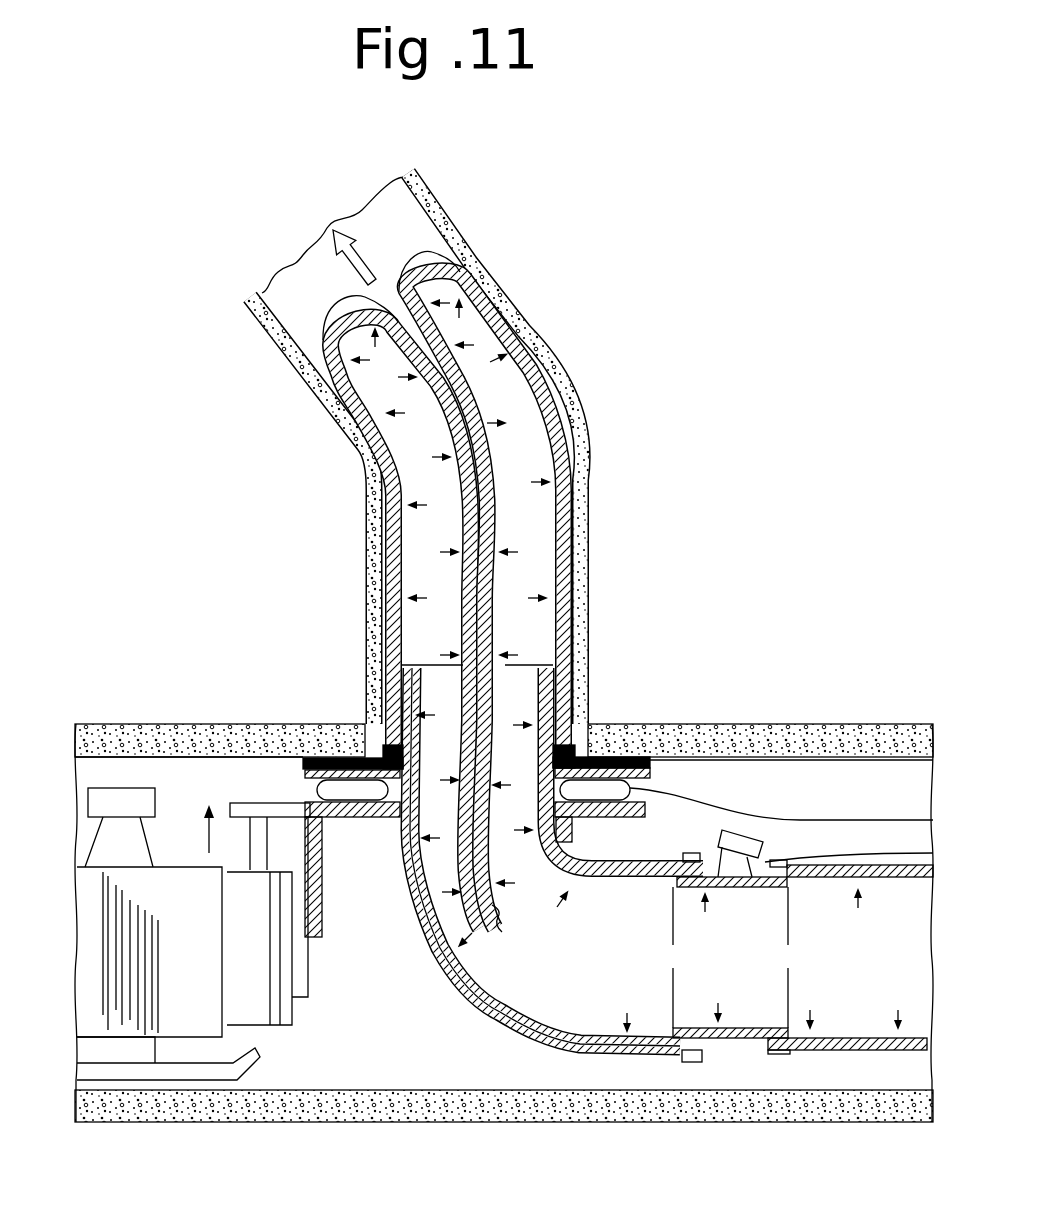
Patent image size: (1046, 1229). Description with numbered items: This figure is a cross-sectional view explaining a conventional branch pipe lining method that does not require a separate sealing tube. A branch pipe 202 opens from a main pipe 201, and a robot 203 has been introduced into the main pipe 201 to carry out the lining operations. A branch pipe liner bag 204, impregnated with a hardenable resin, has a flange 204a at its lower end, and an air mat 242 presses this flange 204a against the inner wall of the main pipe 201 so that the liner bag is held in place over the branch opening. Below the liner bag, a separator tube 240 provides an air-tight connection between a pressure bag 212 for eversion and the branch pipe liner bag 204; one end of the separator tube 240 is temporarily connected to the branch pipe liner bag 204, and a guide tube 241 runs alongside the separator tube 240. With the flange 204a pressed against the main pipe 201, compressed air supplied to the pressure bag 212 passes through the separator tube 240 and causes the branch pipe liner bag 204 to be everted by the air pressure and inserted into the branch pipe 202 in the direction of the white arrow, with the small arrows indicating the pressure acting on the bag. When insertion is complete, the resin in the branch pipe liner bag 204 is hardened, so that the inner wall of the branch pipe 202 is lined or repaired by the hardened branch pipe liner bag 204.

The main pipe 201 is at (783, 745).
The branch pipe 202 is at (588, 442).
The robot 203 is at (197, 980).
The branch pipe liner bag 204 is at (497, 574).
The flange 204a is at (648, 763).
The pressure bag 212 is at (800, 1052).
The separator tube 240 is at (488, 992).
The guide tube 241 is at (450, 983).
The air mat 242 is at (317, 792).